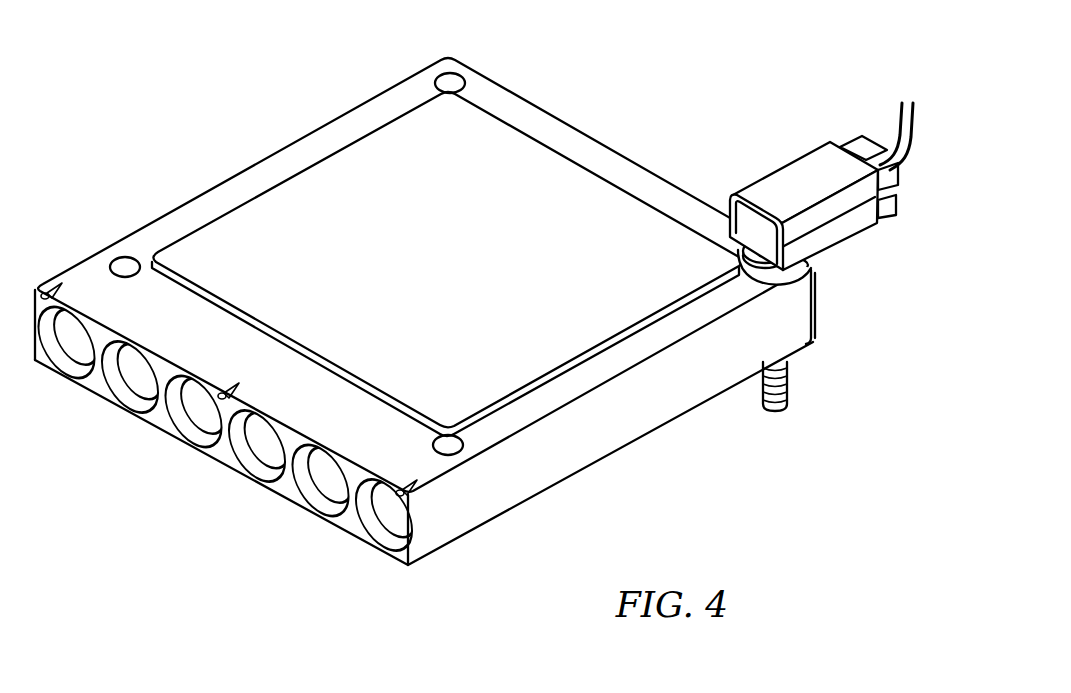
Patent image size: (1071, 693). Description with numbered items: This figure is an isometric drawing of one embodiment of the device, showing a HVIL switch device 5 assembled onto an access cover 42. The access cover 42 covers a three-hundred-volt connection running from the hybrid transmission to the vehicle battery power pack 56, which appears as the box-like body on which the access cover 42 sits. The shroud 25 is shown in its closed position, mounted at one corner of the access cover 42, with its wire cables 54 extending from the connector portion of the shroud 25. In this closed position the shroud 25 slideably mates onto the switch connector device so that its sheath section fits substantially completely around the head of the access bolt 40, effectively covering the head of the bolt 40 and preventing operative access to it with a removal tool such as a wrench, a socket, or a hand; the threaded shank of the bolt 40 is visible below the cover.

The HVIL switch device 5 is at (814, 209).
The shroud 25 is at (833, 217).
The access bolt 40 is at (787, 382).
The access cover 42 is at (372, 217).
The wire cables 54 is at (898, 118).
The vehicle battery power pack 56 is at (545, 444).